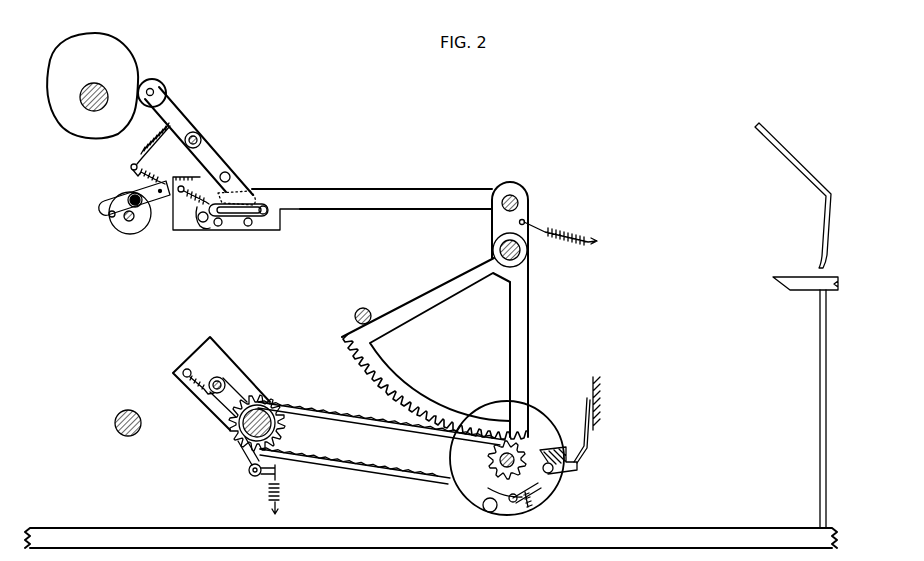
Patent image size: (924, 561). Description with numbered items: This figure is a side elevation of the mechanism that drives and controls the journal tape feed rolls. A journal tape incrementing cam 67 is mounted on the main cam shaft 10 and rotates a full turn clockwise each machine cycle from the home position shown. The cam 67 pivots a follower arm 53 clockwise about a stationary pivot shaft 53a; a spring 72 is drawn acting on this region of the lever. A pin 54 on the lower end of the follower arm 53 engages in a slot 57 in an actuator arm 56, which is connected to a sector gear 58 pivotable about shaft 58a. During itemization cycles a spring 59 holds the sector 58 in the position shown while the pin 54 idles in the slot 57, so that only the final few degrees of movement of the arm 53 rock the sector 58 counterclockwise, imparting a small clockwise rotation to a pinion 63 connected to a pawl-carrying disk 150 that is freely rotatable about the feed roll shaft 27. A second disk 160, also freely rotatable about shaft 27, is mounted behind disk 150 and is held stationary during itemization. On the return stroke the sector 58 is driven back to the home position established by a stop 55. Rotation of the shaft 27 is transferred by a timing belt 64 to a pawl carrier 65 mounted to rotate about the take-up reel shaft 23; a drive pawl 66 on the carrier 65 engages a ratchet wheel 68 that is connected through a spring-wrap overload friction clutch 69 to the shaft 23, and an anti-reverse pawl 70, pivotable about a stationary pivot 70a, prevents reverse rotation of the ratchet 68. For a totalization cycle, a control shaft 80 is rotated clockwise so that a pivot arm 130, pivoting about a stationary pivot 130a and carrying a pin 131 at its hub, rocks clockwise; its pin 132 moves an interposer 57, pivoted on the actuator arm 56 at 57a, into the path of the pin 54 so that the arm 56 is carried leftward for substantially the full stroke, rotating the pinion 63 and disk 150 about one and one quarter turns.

The journal tape incrementing cam 67 is at (128, 37).
The main cam shaft 10 is at (85, 86).
The follower arm 53 is at (177, 98).
The stationary pivot shaft 53a is at (205, 132).
The spring 72 is at (157, 153).
The pivot arm 130 is at (106, 212).
The stationary pivot 130a is at (128, 194).
The pin 131 is at (120, 222).
The control shaft 80 is at (133, 234).
The slot / interposer 57 is at (255, 190).
The interposer pivot 57a is at (203, 224).
The pin 132 is at (234, 174).
The pin 54 is at (267, 208).
The actuator arm 56 is at (402, 188).
The sector gear 58 is at (531, 318).
The sector gear shaft 58a is at (523, 258).
The spring 59 is at (565, 224).
The stop 55 is at (367, 306).
The pawl-carrying disk 150 is at (533, 402).
The pinion 63 is at (521, 452).
The feed roll shaft 27 is at (494, 466).
The second disk 160 is at (568, 484).
The pawl carrier 65 is at (214, 340).
The drive pawl 66 is at (229, 380).
The spring-wrap overload friction clutch 69 is at (268, 400).
The ratchet wheel 68 is at (234, 434).
The journal tape take-up reel shaft 23 is at (250, 452).
The anti-reverse pawl 70 is at (283, 473).
The stationary pivot 70a is at (252, 476).
The timing belt 64 is at (379, 470).